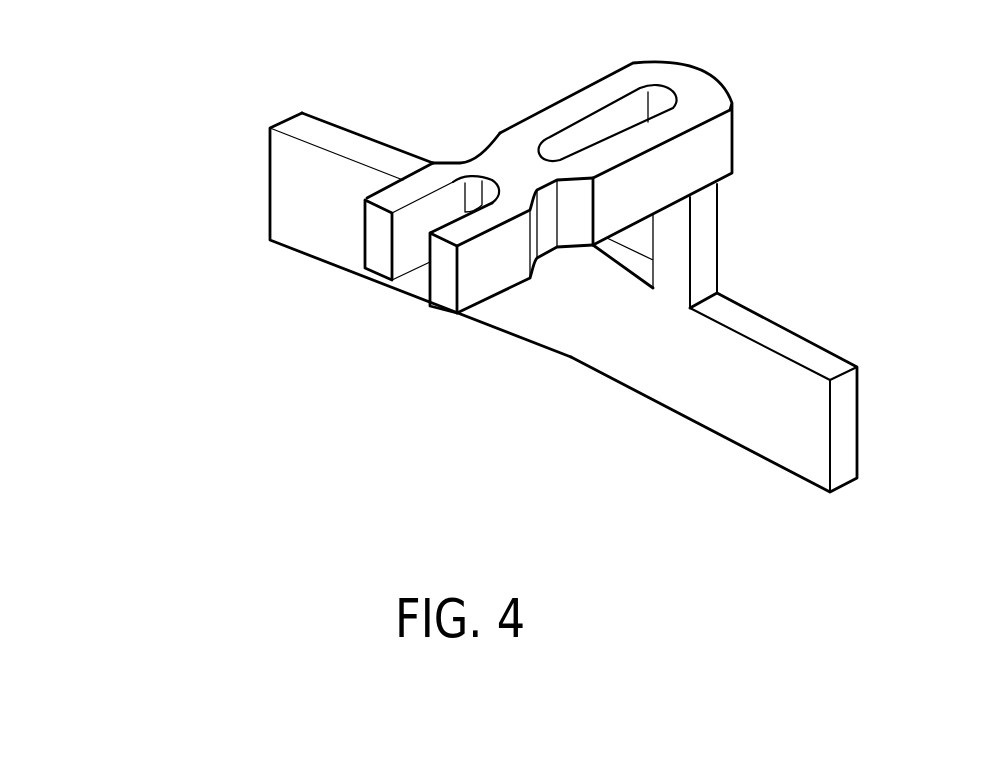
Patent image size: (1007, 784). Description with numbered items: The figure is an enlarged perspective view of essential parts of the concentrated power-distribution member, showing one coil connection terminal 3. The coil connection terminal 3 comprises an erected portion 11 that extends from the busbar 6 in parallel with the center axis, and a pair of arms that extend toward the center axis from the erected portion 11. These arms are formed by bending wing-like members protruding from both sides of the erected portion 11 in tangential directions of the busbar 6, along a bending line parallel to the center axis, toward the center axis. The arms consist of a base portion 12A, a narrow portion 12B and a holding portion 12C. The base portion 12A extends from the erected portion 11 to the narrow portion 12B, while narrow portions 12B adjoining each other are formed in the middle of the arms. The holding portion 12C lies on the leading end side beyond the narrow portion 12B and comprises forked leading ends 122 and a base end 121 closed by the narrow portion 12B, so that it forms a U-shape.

The coil connection terminal 3 is at (94, 3).
The base portion 12A is at (573, 98).
The narrow portion 12B is at (492, 157).
The holding portion 12C is at (166, 190).
The base end 121 is at (470, 200).
The forked leading ends 122 is at (443, 292).
The erected portion 11 is at (673, 260).
The busbar 6 is at (800, 350).